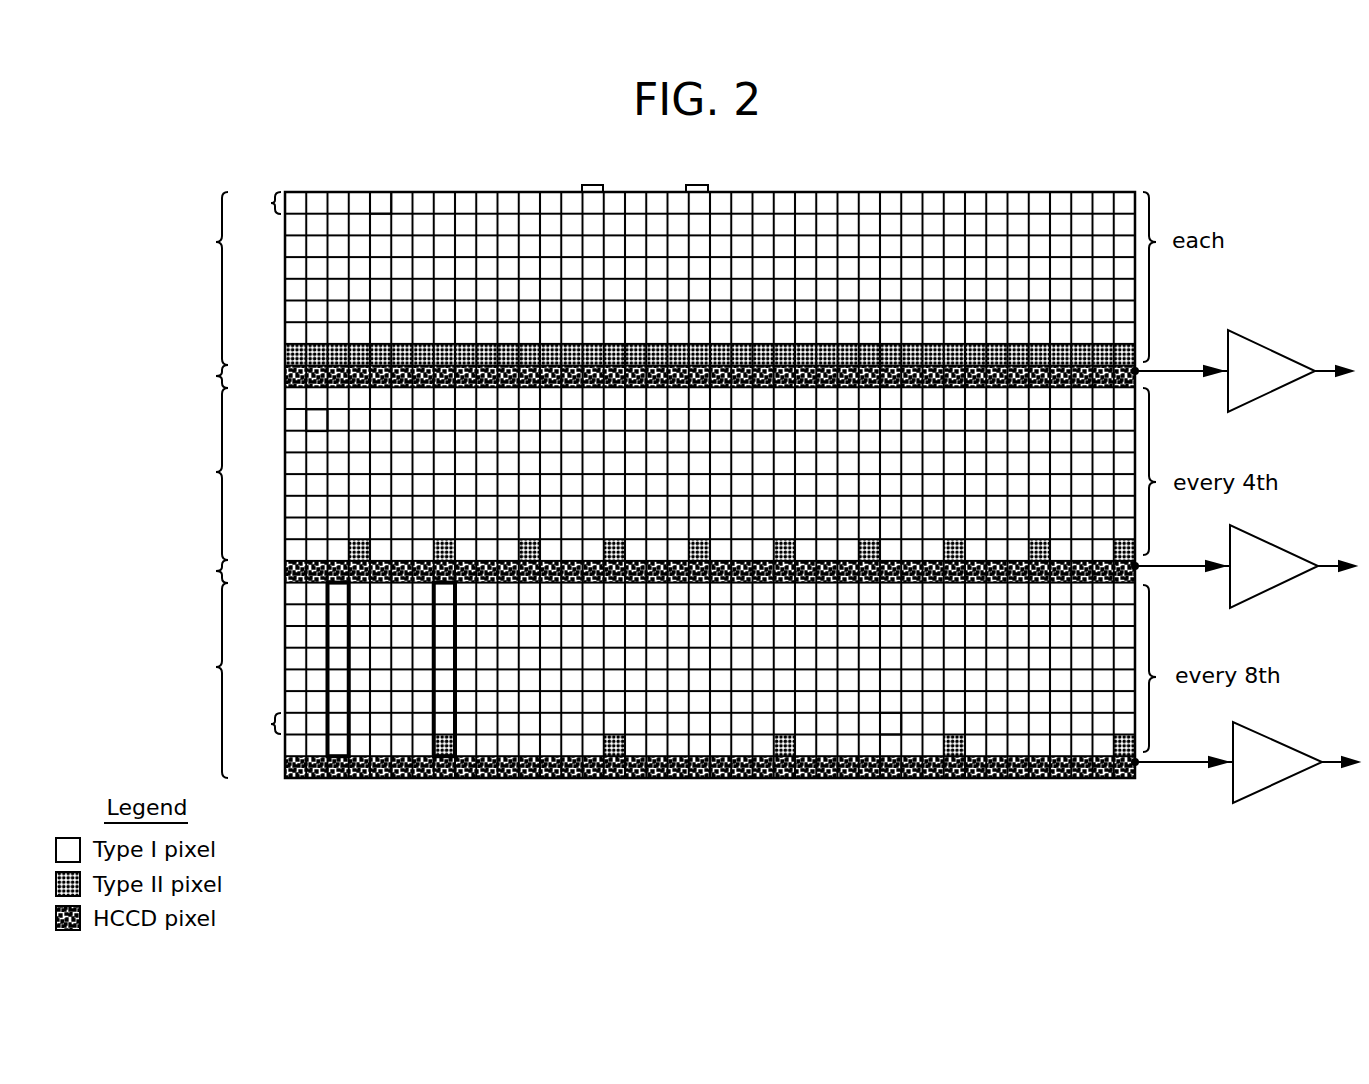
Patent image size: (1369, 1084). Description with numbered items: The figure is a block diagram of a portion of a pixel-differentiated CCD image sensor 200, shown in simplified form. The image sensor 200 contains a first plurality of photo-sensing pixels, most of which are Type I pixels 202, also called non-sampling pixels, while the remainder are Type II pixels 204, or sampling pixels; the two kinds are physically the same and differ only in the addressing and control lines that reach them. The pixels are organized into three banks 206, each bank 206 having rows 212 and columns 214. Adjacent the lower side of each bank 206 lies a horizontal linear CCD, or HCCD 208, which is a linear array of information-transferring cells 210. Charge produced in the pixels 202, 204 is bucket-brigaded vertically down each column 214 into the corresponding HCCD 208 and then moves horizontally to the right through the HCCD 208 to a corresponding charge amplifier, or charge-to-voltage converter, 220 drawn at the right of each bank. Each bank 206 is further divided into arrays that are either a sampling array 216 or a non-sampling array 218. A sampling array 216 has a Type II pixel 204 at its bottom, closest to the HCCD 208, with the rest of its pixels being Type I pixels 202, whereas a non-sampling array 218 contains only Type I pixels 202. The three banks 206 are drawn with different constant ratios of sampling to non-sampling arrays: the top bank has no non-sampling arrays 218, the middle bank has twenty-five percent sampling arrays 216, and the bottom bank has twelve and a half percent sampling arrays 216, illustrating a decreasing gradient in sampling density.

The pixel-differentiated CCD image sensor 200 is at (760, 790).
The Type I pixel 202 is at (408, 193).
The Type II pixel 204 is at (306, 357).
The bank 206 is at (152, 669).
The horizontal linear CCD (HCCD) 208 is at (100, 596).
The information-transferring cell 210 is at (1137, 353).
The row 212 is at (258, 465).
The column 214 is at (593, 184).
The sampling array 216 is at (459, 722).
The non-sampling array 218 is at (330, 725).
The charge amplifier (charge-to-voltage converter) 220 is at (1290, 747).